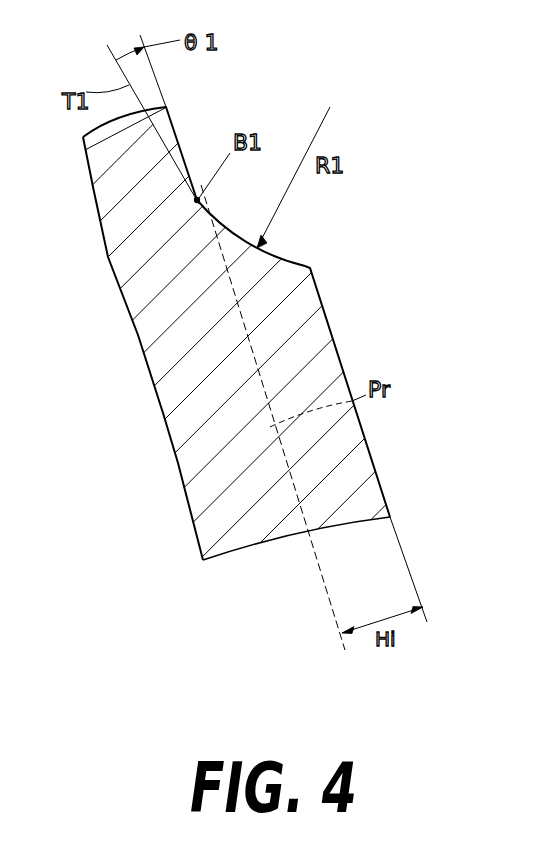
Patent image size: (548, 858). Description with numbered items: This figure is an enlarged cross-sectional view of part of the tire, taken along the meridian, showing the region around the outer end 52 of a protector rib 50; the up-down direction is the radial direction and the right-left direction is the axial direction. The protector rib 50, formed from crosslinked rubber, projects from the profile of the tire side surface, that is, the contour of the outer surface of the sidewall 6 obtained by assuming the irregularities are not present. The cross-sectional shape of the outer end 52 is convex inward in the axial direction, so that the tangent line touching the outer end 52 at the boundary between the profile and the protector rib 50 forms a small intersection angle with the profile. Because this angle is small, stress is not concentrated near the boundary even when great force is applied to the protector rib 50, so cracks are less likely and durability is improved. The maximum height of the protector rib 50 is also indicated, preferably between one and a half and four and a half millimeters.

The sidewall 6 is at (195, 455).
The protector rib 50 is at (362, 462).
The outer end 52 is at (274, 257).